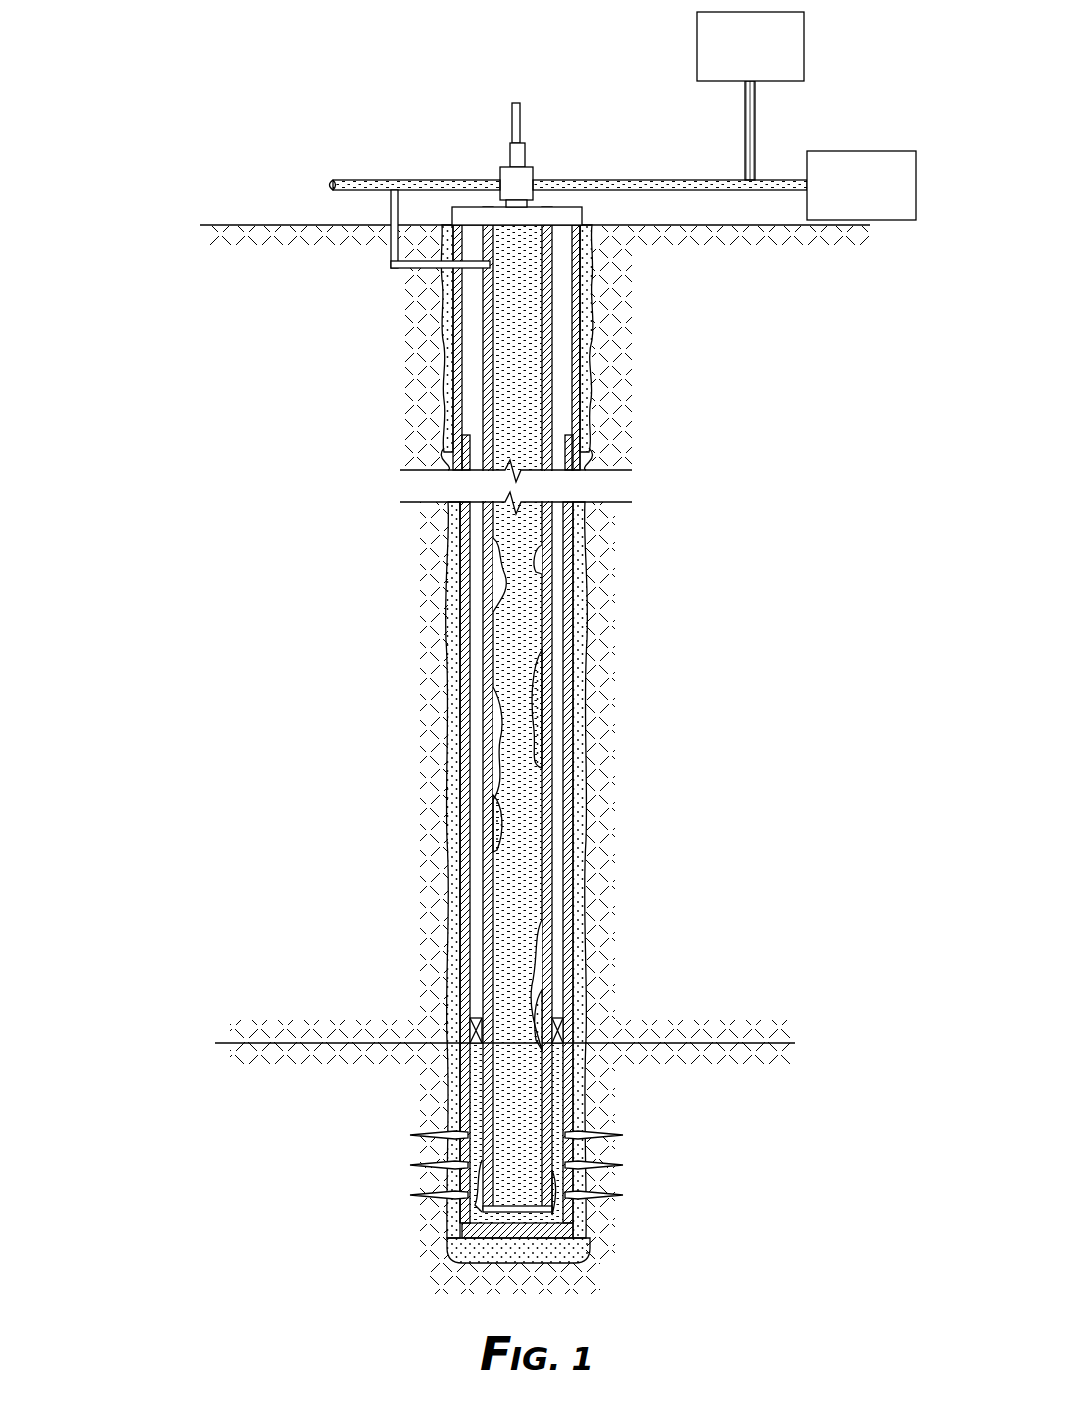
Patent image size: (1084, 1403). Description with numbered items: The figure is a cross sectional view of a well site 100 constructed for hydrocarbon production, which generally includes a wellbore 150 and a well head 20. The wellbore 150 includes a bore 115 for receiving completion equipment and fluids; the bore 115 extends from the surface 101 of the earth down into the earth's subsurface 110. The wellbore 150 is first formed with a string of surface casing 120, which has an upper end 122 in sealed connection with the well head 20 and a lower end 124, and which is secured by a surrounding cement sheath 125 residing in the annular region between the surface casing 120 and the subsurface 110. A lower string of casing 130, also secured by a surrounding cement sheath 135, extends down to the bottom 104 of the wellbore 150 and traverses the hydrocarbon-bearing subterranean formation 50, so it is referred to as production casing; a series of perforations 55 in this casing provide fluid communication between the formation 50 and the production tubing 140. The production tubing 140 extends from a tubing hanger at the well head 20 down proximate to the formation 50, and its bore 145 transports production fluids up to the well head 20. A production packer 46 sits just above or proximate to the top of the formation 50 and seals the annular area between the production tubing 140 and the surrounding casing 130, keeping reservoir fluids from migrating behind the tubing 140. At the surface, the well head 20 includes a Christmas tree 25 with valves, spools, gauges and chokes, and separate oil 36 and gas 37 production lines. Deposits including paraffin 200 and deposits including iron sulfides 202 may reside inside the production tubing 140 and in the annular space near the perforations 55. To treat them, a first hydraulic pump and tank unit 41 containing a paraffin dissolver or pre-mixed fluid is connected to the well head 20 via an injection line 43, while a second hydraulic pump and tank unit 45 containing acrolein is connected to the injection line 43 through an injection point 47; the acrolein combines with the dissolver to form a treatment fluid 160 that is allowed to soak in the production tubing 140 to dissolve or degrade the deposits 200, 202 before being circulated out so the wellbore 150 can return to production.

The well site 100 is at (195, 57).
The well head 20 is at (592, 84).
The Christmas tree 25 is at (508, 158).
The oil production line 36 is at (348, 178).
The gas production line 37 is at (390, 212).
The first hydraulic pump and tank unit 41 is at (874, 196).
The injection line 43 is at (662, 178).
The second hydraulic pump and tank unit 45 is at (766, 58).
The injection point 47 is at (757, 118).
The surface 101 is at (235, 224).
The earth subsurface 110 is at (430, 309).
The bore 115 is at (447, 370).
The surface casing 120 is at (583, 355).
The upper end of surface casing 122 is at (580, 278).
The lower end of surface casing 124 is at (590, 440).
The cement sheath 125 is at (448, 431).
The lower string of casing 130 is at (460, 905).
The cement sheath 135 is at (460, 967).
The production tubing 140 is at (495, 652).
The bore of production tubing 145 is at (540, 558).
The wellbore 150 is at (597, 616).
The treatment fluid 160 is at (515, 860).
The paraffin deposits 200 is at (545, 683).
The iron sulfide scale deposits 202 is at (500, 555).
The production packer 46 is at (565, 1012).
The hydrocarbon-bearing subterranean formation 50 is at (372, 1076).
The perforations 55 is at (610, 1152).
The bottom of the wellbore 104 is at (565, 1270).